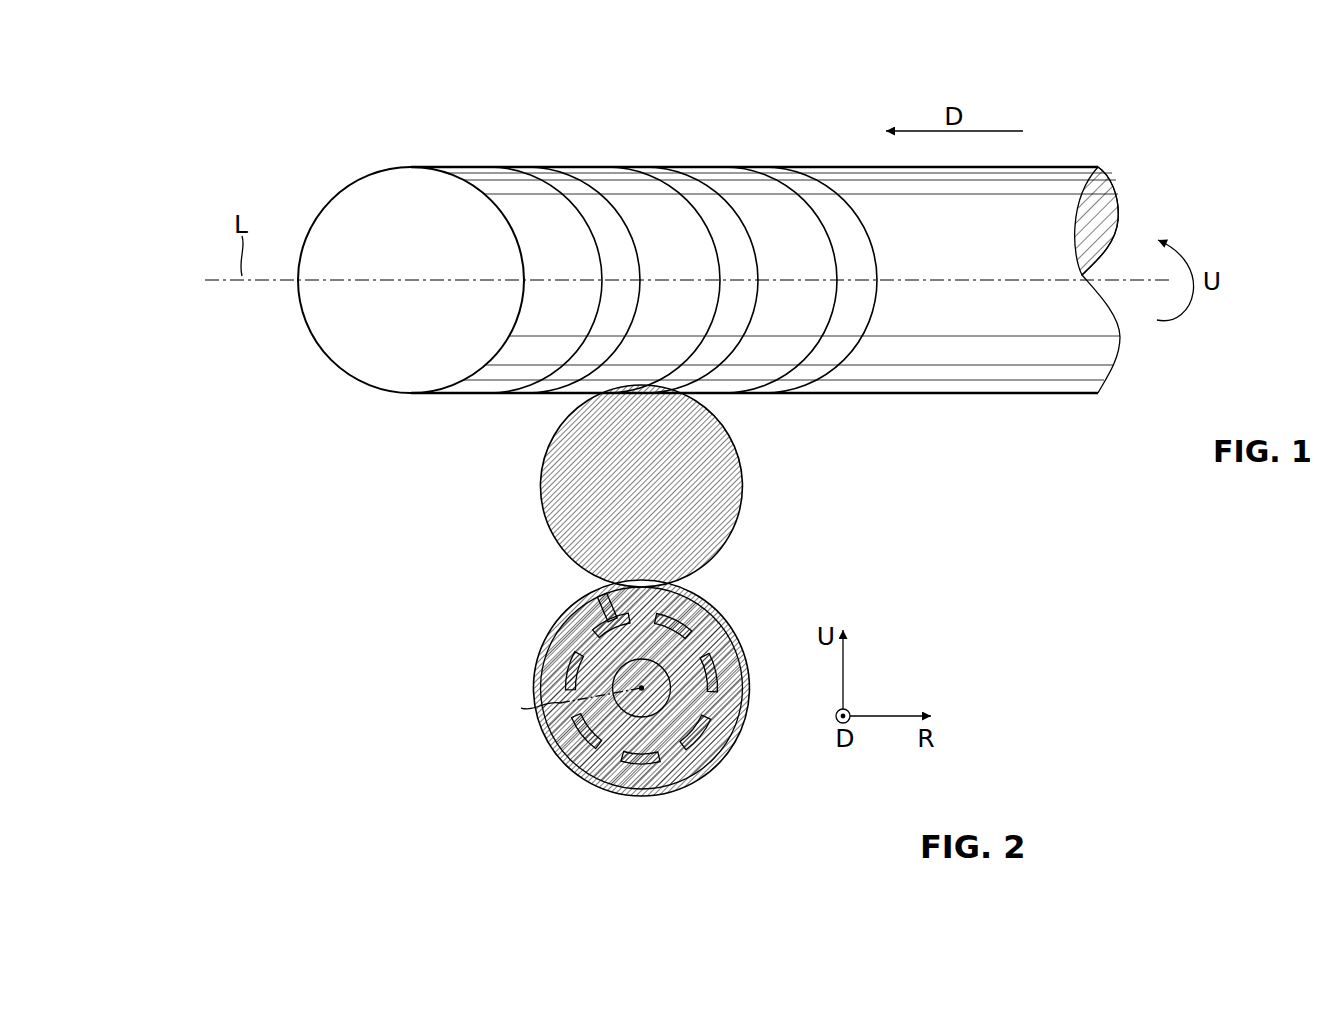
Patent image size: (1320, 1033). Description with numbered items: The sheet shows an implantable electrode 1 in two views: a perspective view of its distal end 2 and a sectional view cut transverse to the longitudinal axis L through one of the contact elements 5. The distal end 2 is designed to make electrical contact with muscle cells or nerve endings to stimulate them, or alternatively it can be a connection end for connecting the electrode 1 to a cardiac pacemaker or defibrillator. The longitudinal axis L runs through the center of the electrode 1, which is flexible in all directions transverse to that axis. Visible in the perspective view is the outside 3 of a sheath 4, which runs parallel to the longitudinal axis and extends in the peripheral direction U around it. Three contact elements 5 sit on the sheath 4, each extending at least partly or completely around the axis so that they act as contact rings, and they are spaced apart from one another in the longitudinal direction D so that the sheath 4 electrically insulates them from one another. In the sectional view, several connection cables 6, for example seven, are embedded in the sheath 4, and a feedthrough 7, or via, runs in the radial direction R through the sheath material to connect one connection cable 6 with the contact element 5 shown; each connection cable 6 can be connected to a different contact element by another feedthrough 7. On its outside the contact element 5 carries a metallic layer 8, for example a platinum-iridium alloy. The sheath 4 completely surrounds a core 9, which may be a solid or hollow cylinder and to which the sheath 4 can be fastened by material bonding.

In FIG. 1, the implantable electrode 1 is at (709, 251).
In FIG. 2, the implantable electrode 1 is at (647, 614).
In FIG. 1, the distal end 2 is at (451, 156).
In FIG. 1, the outside 3 is at (1019, 352).
In FIG. 1, the sheath 4 is at (907, 396).
In FIG. 2, the sheath 4 is at (680, 765).
In FIG. 1, the contact element 5 is at (601, 187).
In FIG. 2, the contact element 5 is at (560, 622).
In FIG. 2, the connection cable 6 is at (640, 764).
In FIG. 2, the feedthrough 7 is at (604, 598).
In FIG. 2, the metallic layer 8 is at (538, 655).
In FIG. 2, the core 9 is at (640, 659).